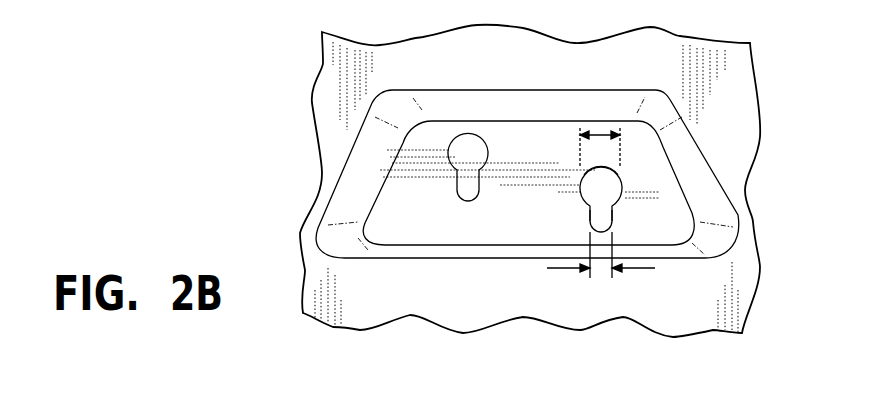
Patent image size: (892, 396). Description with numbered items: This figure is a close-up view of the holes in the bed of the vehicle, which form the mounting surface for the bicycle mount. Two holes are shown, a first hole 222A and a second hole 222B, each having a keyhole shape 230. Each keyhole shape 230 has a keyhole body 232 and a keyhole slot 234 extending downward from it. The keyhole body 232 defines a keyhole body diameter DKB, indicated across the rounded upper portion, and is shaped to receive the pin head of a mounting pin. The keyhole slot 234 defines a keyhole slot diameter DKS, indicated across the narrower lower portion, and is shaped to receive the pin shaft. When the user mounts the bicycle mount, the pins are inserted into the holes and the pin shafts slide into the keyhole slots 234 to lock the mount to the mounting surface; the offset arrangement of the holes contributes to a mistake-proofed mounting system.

The first hole 222A is at (454, 137).
The second hole 222B is at (622, 183).
The keyhole shape 230 is at (603, 167).
The keyhole body 232 is at (620, 169).
The keyhole slot 234 is at (613, 218).
The keyhole body diameter DKB is at (602, 135).
The keyhole slot diameter DKS is at (567, 268).